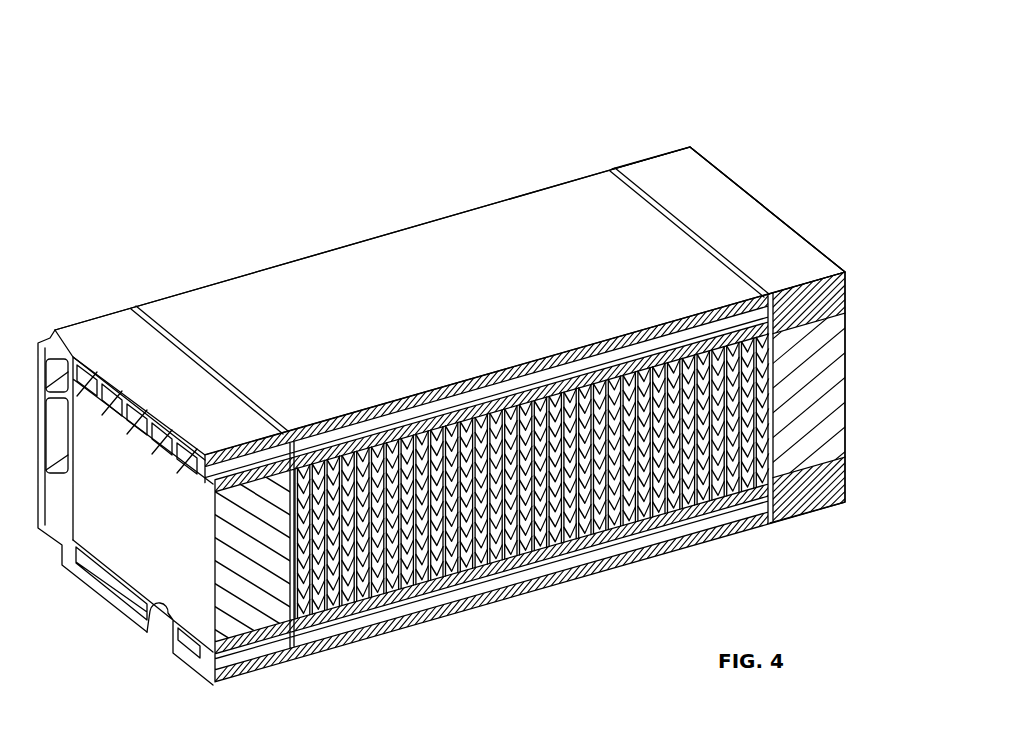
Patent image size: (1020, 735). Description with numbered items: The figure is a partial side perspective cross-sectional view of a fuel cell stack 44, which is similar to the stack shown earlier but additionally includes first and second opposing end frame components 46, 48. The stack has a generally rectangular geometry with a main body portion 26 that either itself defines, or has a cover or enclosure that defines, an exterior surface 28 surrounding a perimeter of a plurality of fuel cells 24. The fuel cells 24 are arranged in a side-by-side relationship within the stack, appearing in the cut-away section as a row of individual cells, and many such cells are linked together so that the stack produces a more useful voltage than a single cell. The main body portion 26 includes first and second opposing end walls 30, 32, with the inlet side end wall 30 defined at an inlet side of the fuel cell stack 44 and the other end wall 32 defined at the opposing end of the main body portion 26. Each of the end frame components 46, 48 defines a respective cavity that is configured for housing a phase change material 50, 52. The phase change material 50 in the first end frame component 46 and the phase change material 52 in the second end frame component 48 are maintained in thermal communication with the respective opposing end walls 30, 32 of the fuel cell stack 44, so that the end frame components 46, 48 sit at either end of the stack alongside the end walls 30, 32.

The fuel cell stack 44 is at (812, 101).
The fuel cells 24 is at (407, 557).
The main body portion 26 is at (318, 272).
The exterior surface 28 is at (413, 324).
The inlet side end wall 30 is at (146, 297).
The end wall 32 is at (594, 163).
The first end frame component 46 is at (95, 330).
The second end frame component 48 is at (728, 212).
The phase change material 50 is at (148, 562).
The phase change material 52 is at (832, 406).